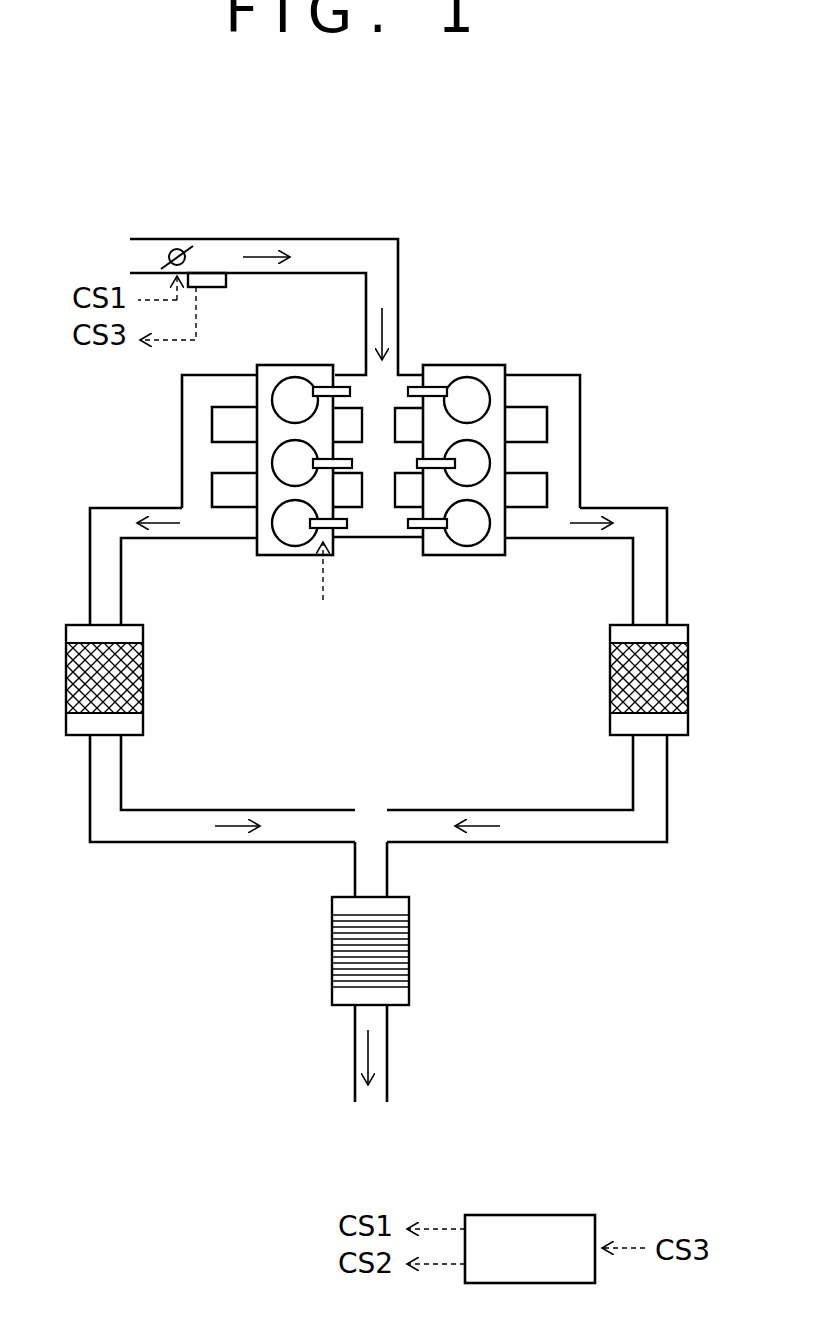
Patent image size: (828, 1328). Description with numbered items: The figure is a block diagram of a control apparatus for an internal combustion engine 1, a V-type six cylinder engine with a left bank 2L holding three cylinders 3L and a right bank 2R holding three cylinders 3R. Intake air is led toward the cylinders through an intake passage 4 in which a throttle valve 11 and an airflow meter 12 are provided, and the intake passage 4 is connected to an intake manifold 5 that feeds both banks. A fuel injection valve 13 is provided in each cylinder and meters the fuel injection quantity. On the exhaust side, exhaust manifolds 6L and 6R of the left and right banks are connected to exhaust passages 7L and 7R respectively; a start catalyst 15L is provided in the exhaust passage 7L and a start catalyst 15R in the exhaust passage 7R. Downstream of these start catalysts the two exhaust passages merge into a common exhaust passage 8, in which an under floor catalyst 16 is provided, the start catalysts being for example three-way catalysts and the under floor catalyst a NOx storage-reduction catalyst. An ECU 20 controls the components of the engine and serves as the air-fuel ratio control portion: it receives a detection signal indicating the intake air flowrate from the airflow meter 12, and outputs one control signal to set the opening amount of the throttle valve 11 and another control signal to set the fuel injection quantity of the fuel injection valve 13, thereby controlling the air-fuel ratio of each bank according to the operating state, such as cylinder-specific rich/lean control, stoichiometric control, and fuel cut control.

The internal combustion engine 1 is at (391, 446).
The left bank 2L is at (291, 442).
The right bank 2R is at (477, 453).
The cylinders of the left bank 3L is at (292, 546).
The cylinders of the right bank 3R is at (470, 546).
The intake passage 4 is at (298, 238).
The intake manifold 5 is at (392, 463).
The exhaust manifold 6L is at (182, 410).
The exhaust manifold 6R is at (568, 385).
The exhaust passage 7L is at (108, 506).
The exhaust passage 7R is at (642, 506).
The common exhaust passage 8 is at (387, 868).
The throttle valve 11 is at (177, 246).
The airflow meter 12 is at (223, 290).
The fuel injection valve 13 is at (338, 542).
The start catalyst 15L is at (143, 665).
The start catalyst 15R is at (610, 665).
The under floor catalyst 16 is at (409, 945).
The ECU 20 is at (518, 1215).